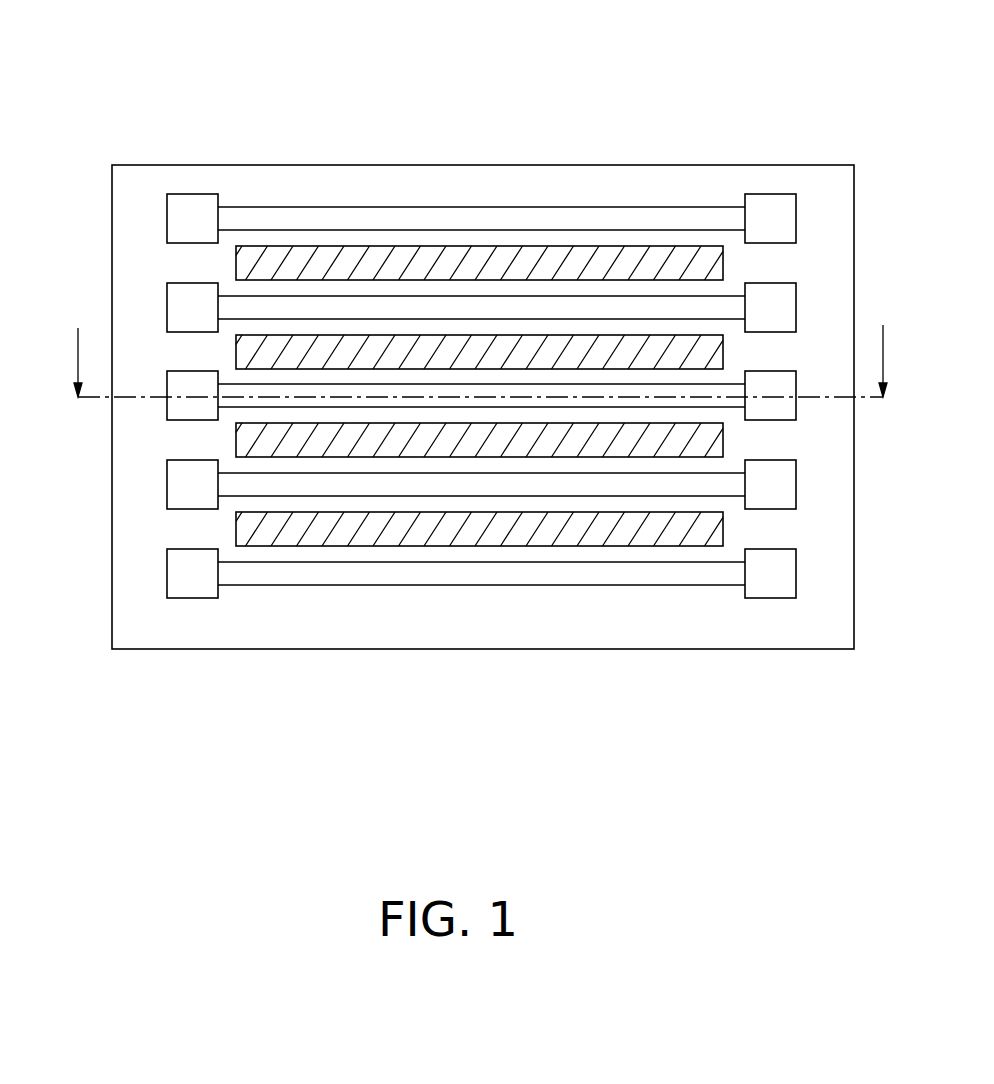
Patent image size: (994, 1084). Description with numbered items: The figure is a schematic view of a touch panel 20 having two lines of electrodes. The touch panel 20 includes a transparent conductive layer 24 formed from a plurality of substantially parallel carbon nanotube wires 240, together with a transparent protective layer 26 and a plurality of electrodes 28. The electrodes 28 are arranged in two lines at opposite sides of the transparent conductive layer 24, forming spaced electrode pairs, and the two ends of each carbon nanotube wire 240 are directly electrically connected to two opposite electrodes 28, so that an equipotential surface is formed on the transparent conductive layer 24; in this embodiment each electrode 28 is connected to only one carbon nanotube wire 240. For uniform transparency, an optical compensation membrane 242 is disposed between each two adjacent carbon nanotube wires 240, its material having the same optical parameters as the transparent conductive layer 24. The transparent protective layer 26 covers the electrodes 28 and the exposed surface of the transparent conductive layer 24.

The touch panel 20 is at (496, 45).
The transparent conductive layer 24 is at (325, 190).
The carbon nanotube wire 240 is at (258, 220).
The optical compensation membrane 242 is at (255, 527).
The transparent protective layer 26 is at (431, 603).
The electrode 28 is at (192, 578).